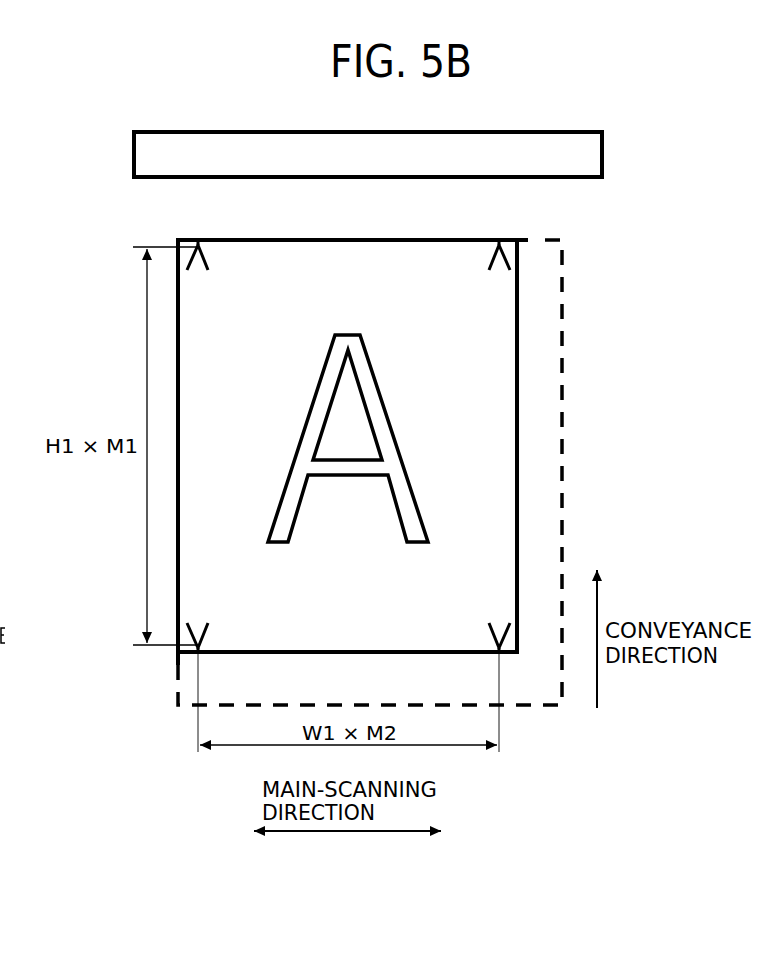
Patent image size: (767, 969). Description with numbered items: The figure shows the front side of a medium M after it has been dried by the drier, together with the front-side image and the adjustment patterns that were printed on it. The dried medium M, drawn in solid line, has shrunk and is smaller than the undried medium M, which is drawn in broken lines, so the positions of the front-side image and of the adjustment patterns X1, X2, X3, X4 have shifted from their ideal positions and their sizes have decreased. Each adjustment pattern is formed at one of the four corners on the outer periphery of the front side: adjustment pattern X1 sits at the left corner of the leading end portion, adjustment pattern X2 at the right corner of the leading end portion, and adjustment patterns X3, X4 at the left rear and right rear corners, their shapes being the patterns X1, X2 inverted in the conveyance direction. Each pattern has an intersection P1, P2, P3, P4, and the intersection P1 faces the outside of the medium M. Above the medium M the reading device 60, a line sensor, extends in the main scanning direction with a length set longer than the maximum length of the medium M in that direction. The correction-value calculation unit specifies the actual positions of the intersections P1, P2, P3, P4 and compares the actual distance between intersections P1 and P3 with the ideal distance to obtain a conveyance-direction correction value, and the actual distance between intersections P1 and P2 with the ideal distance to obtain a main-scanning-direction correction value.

The reading device 60 is at (570, 116).
The medium M is at (443, 238).
The intersection P1 is at (198, 245).
The intersection P2 is at (499, 245).
The intersection P3 is at (198, 652).
The intersection P4 is at (499, 652).
The adjustment pattern X1 is at (214, 266).
The adjustment pattern X2 is at (482, 265).
The adjustment pattern X3 is at (218, 626).
The adjustment pattern X4 is at (479, 628).